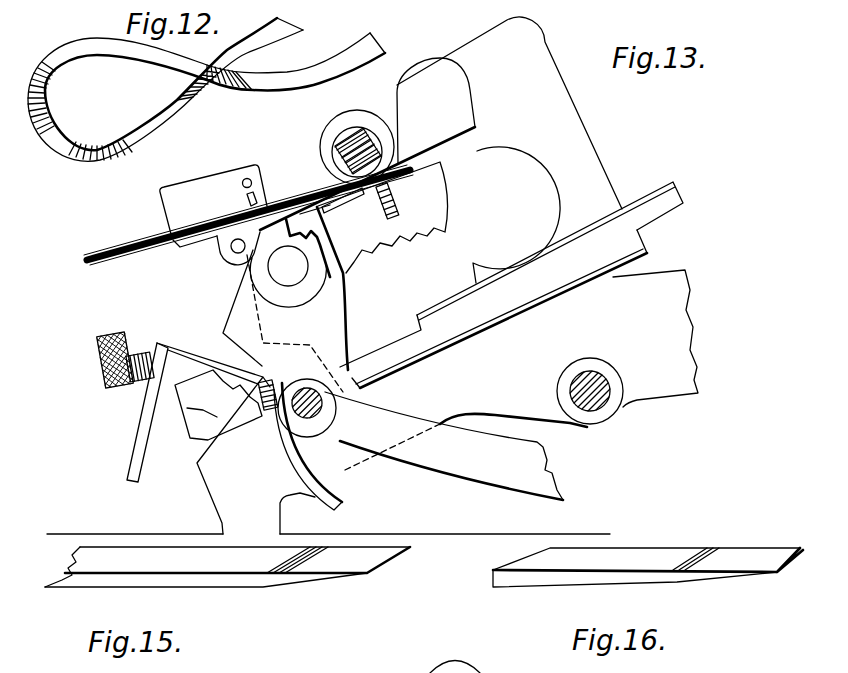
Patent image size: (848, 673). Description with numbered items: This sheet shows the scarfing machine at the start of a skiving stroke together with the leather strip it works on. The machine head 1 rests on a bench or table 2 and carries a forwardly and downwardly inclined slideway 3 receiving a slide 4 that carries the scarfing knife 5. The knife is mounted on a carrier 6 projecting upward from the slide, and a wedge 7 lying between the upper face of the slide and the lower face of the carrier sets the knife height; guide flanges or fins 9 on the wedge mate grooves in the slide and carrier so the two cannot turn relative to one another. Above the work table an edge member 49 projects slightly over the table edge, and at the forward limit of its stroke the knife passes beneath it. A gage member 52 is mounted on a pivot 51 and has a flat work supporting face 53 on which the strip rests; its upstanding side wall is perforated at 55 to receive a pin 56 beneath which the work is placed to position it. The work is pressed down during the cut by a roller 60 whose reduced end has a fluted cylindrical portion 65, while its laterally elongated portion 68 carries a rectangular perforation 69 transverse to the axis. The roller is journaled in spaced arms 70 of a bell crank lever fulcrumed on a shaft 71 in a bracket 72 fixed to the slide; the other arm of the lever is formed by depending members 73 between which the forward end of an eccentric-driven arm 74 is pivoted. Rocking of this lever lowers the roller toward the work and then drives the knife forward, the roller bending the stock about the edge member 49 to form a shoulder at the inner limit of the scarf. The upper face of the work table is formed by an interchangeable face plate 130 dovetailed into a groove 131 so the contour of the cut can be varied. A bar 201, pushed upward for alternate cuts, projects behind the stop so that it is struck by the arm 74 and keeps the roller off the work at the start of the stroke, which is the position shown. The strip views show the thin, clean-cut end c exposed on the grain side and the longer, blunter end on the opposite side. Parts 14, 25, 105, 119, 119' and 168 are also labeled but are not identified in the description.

In FIG. 13, the machine head 1 is at (680, 375).
In FIG. 16, the bench or table 2 is at (790, 553).
In FIG. 13, the slideway 3 is at (566, 290).
In FIG. 13, the slide 4 is at (625, 243).
In FIG. 13, the scarfing knife 5 is at (394, 160).
In FIG. 13, the carrier 6 is at (509, 113).
In FIG. 13, the wedge 7 is at (672, 200).
In FIG. 13, the guide flanges or fins 9 is at (684, 210).
In FIG. 13, the cam 14 is at (412, 85).
In FIG. 13, the sector disc 25 is at (427, 198).
In FIG. 13, the edge member 49 is at (310, 192).
In FIG. 13, the pivot 51 is at (236, 251).
In FIG. 13, the gage member 52 is at (176, 211).
In FIG. 13, the flat work supporting face 53 is at (181, 248).
In FIG. 13, the perforation 55 is at (245, 179).
In FIG. 13, the pin 56 is at (247, 198).
In FIG. 13, the roller 60 is at (362, 111).
In FIG. 13, the cylindrical portion 65 is at (318, 162).
In FIG. 13, the laterally elongated portion 68 is at (374, 130).
In FIG. 13, the rectangular perforation 69 is at (355, 128).
In FIG. 13, the spaced arms 70 is at (313, 185).
In FIG. 13, the shaft 71 is at (288, 276).
In FIG. 13, the bracket 72 is at (318, 334).
In FIG. 13, the depending members 73 is at (270, 362).
In FIG. 13, the arm 74 is at (535, 465).
In FIG. 13, the slot in pin 105 is at (347, 143).
In FIG. 13, the adjusting bar 119 is at (133, 398).
In FIG. 13, the wedge 119' is at (209, 409).
In FIG. 13, the face plate 130 is at (368, 210).
In FIG. 13, the dovetailed groove 131 is at (398, 232).
In FIG. 13, the pivot boss 168 is at (596, 407).
In FIG. 13, the bar 201 is at (340, 497).
In FIG. 15, the end c is at (408, 547).